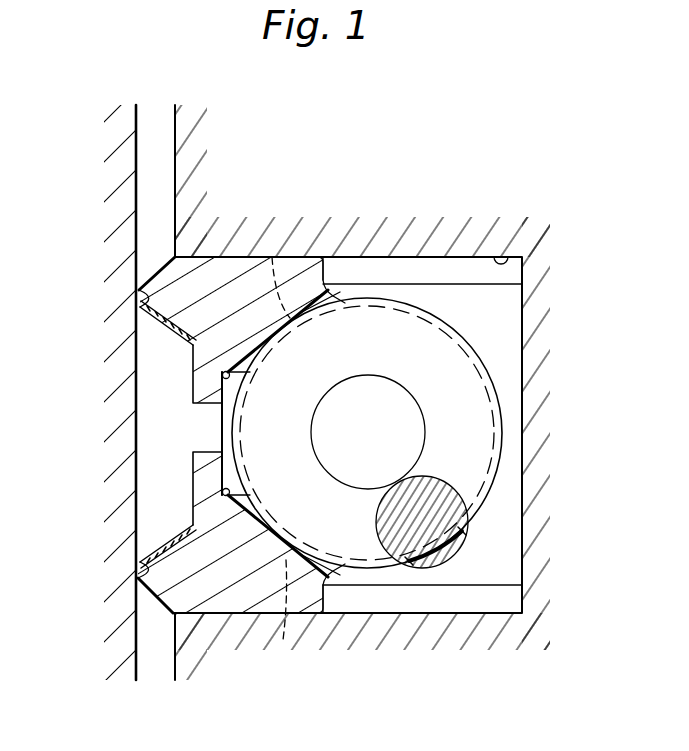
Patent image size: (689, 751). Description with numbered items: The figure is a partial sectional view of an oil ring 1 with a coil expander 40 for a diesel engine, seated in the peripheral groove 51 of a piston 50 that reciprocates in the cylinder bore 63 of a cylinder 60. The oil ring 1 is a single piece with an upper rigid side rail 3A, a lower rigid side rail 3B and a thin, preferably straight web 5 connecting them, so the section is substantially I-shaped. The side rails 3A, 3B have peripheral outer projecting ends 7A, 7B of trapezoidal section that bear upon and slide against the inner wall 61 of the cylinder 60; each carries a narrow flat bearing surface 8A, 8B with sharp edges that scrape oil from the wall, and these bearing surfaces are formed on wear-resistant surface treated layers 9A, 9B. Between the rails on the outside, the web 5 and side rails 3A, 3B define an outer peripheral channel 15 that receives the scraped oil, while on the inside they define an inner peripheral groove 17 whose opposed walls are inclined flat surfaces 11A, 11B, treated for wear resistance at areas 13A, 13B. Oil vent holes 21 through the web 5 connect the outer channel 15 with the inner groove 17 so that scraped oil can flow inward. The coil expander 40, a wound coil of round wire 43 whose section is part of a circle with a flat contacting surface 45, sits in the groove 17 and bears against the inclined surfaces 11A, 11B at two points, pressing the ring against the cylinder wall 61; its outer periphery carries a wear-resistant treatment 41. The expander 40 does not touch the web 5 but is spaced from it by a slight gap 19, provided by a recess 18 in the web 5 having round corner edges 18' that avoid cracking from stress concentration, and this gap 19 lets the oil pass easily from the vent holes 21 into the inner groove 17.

The oil ring 1 is at (222, 323).
The upper rigid side rail 3A is at (297, 270).
The lower rigid side rail 3B is at (212, 600).
The web 5 is at (198, 378).
The peripheral outer projecting end 7A is at (157, 290).
The peripheral outer projecting end 7B is at (172, 628).
The flat bearing surface 8A is at (142, 316).
The flat bearing surface 8B is at (142, 565).
The surface treated layer 9A is at (138, 300).
The surface treated layer 9B is at (140, 578).
The inclined flat surface 11A is at (308, 305).
The inclined flat surface 11B is at (322, 580).
The wear resistance treated area 13A is at (272, 257).
The wear resistance treated area 13B is at (283, 640).
The outer peripheral channel 15 is at (157, 484).
The inner peripheral groove 17 is at (235, 383).
The recess 18 is at (140, 449).
The round corner edges 18' is at (189, 416).
The gap 19 is at (232, 430).
The oil vent holes 21 is at (197, 432).
The coil expander 40 is at (467, 362).
The wear resistance treatment 41 is at (462, 335).
The round wire 43 is at (455, 510).
The flat contacting surface 45 is at (452, 548).
The piston 50 is at (610, 461).
The peripheral groove 51 is at (504, 257).
The cylinder 60 is at (84, 448).
The inner wall 61 is at (145, 277).
The cylinder bore 63 is at (137, 162).